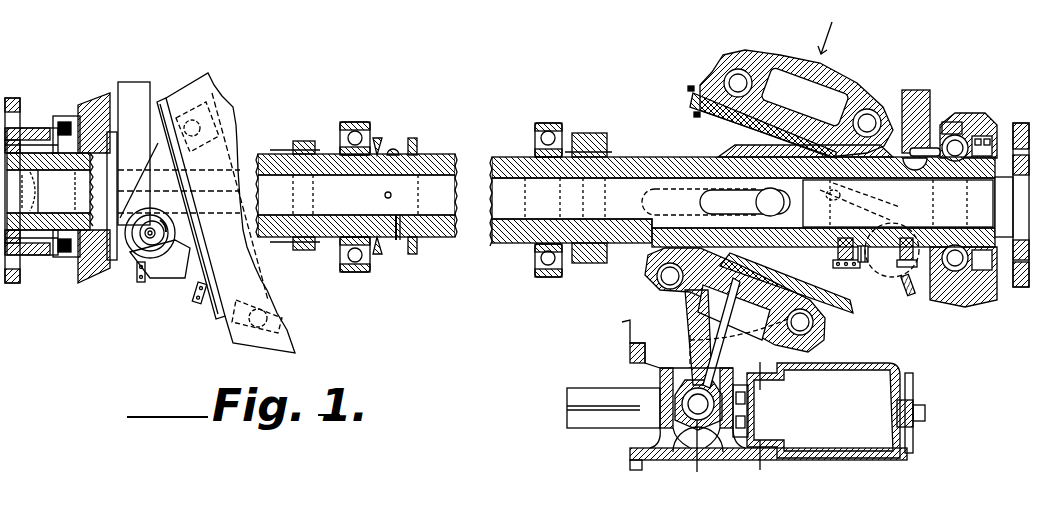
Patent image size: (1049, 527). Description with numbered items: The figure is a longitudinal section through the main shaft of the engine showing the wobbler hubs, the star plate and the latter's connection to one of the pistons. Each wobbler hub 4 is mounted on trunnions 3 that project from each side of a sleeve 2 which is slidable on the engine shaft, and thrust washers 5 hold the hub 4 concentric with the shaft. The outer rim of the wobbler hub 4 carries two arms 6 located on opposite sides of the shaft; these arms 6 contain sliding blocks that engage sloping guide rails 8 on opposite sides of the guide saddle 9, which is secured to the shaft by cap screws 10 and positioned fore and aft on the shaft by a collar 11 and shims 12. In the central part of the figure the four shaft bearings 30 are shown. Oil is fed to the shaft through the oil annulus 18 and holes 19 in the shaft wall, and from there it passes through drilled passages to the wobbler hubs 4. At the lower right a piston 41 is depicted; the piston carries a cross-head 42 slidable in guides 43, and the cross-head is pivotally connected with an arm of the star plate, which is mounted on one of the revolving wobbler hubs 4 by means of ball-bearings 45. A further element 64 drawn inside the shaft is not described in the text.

The sleeve 2 is at (716, 150).
The trunnions 3 is at (678, 156).
The wobbler hub 4 is at (157, 104).
The thrust washers 5 is at (690, 338).
The arms 6 is at (138, 262).
The guide rails 8 is at (884, 258).
The guide saddle 9 is at (836, 255).
The cap screws 10 is at (853, 262).
The collar 11 is at (958, 146).
The shims 12 is at (933, 142).
The oil annulus 18 is at (392, 150).
The holes 19 is at (398, 242).
The shaft bearings 30 is at (82, 132).
The piston 41 is at (585, 395).
The cross-heads 42 is at (764, 382).
The guides 43 is at (826, 455).
The ball-bearings 45 is at (869, 116).
The cam 64 is at (659, 197).